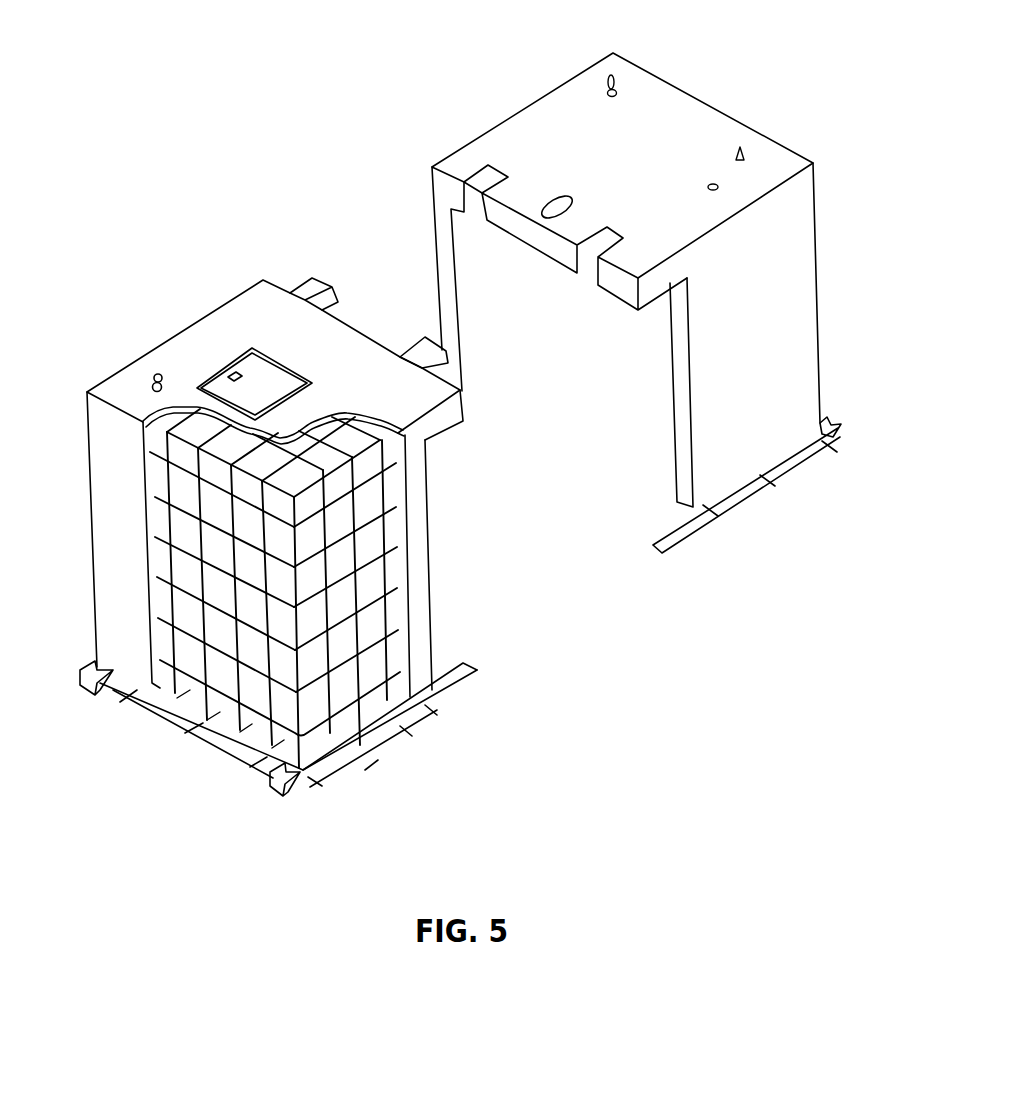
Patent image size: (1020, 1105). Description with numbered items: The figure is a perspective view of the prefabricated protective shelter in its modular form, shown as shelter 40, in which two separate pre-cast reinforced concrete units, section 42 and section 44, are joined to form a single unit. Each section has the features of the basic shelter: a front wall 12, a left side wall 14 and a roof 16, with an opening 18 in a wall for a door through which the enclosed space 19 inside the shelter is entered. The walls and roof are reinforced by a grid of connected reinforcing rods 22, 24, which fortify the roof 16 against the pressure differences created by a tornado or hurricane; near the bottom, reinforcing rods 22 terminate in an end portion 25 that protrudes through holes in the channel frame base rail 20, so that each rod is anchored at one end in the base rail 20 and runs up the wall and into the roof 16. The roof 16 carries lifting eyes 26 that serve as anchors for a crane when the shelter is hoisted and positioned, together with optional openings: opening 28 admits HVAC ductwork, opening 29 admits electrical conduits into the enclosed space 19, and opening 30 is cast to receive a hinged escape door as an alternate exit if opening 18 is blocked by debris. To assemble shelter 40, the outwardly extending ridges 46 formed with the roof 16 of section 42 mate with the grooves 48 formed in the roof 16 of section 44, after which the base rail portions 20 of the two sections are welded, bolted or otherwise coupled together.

The front wall 12 is at (793, 237).
The left side wall 14 is at (110, 453).
The roof 16 is at (683, 128).
The opening 18 is at (685, 498).
The enclosed space 19 is at (466, 578).
The channel frame base rail 20 is at (840, 433).
The reinforcing rods 22 is at (269, 659).
The reinforcing rods 24 is at (275, 435).
The end portion 25 is at (363, 735).
The lifting eyes 26 is at (613, 77).
The opening 28 is at (557, 207).
The opening 29 is at (713, 187).
The opening 30 is at (252, 370).
The shelter 40 is at (733, 44).
The section 42 is at (131, 334).
The section 44 is at (587, 52).
The ridges 46 is at (312, 283).
The grooves 48 is at (478, 185).